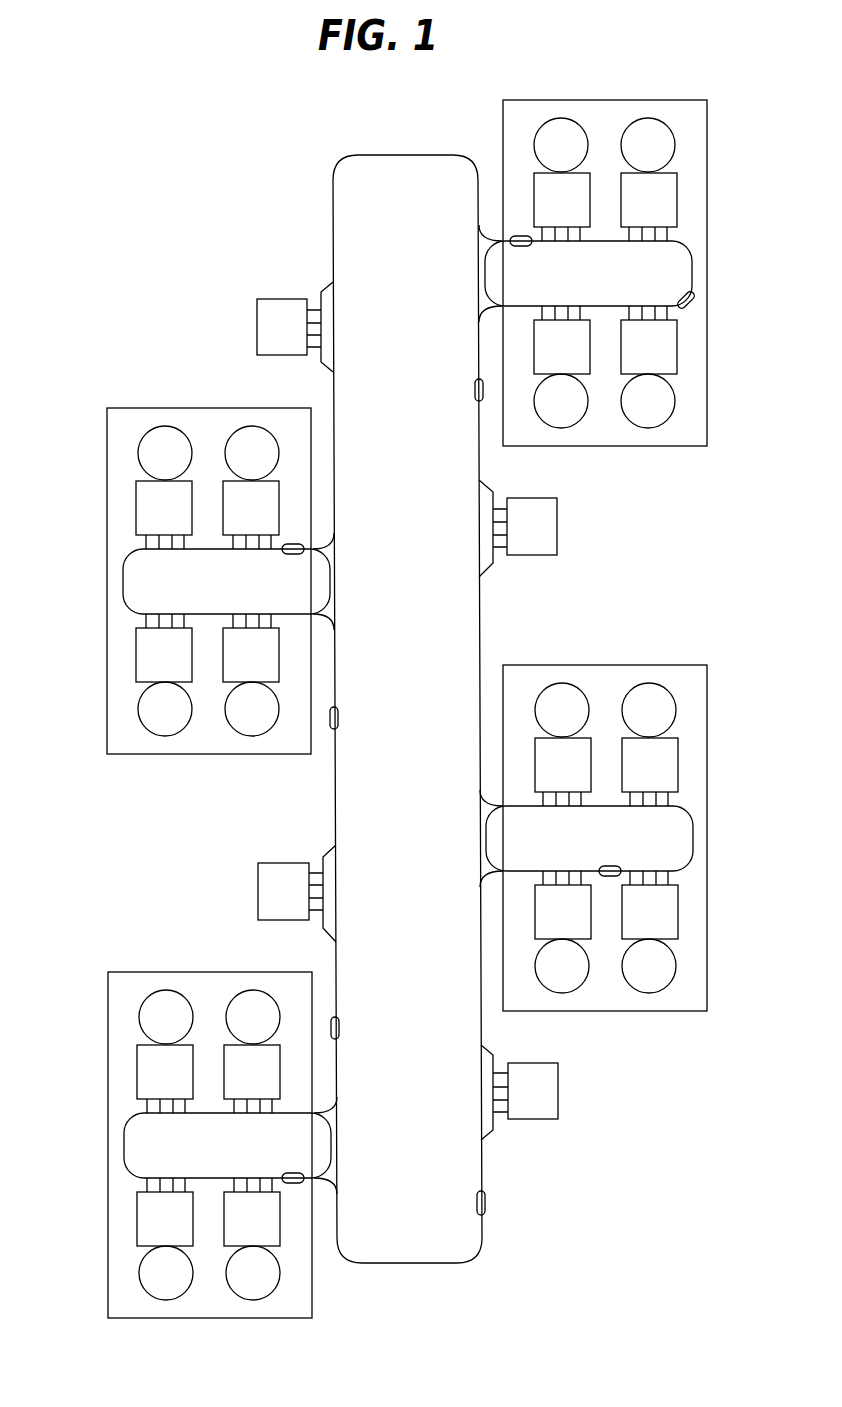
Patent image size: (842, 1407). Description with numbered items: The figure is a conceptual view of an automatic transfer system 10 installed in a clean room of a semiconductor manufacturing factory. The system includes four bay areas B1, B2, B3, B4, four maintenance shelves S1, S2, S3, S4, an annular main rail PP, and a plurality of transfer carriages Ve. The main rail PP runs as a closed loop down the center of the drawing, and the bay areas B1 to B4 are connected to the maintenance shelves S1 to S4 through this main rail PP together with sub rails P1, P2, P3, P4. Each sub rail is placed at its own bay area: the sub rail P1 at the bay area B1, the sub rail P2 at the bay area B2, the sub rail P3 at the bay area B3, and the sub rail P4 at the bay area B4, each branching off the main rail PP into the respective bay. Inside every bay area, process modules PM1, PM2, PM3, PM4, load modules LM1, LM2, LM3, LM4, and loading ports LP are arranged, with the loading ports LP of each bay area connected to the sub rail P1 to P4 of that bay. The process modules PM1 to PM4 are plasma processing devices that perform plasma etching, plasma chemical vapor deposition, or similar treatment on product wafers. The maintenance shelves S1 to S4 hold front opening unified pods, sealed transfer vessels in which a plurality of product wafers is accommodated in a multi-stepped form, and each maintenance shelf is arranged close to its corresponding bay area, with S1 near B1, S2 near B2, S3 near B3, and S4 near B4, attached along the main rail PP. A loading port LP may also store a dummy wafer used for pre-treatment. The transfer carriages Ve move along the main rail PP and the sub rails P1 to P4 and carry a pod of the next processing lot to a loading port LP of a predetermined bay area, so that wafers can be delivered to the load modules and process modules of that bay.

The automatic transfer system 10 is at (272, 146).
The main rail PP is at (405, 155).
The maintenance shelf S1 is at (295, 327).
The maintenance shelf S2 is at (518, 528).
The maintenance shelf S3 is at (297, 893).
The maintenance shelf S4 is at (519, 1092).
The bay area B1 is at (107, 478).
The bay area B2 is at (707, 171).
The bay area B3 is at (108, 1040).
The bay area B4 is at (707, 733).
The sub rail P1 is at (123, 580).
The sub rail P2 is at (692, 273).
The sub rail P3 is at (124, 1145).
The sub rail P4 is at (693, 836).
The loading port LP is at (140, 545).
The transfer carriage Ve is at (486, 1202).
The process module PM1 is at (407, 709).
The process module PM2 is at (407, 709).
The process module PM3 is at (407, 709).
The process module PM4 is at (407, 709).
The load module LM1 is at (407, 709).
The load module LM2 is at (407, 709).
The load module LM3 is at (407, 709).
The load module LM4 is at (407, 709).